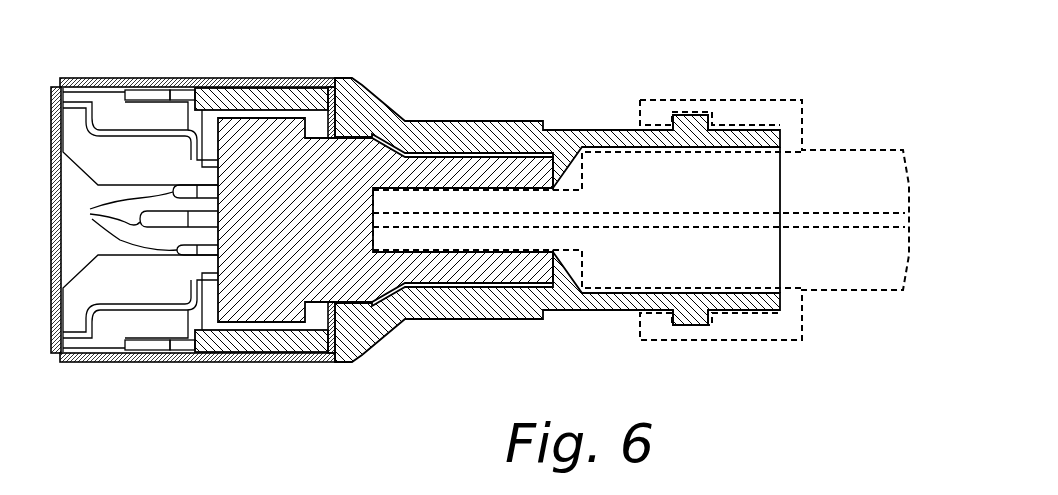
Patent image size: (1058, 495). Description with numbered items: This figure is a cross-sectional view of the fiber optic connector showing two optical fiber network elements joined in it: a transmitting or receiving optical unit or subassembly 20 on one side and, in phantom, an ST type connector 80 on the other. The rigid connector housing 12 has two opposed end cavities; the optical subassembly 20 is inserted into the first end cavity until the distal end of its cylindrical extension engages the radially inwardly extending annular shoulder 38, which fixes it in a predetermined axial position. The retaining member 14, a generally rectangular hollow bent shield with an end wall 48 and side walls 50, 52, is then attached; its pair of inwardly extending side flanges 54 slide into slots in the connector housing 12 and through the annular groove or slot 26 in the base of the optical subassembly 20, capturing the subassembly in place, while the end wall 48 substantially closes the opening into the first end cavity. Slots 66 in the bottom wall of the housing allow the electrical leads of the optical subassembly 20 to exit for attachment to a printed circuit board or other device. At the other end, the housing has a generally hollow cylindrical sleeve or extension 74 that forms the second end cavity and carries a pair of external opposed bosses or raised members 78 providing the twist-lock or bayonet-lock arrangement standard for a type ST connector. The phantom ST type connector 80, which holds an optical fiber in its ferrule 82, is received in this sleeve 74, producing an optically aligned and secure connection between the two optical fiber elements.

The connector housing 12 is at (470, 120).
The retaining member 14 is at (276, 74).
The transmitting or receiving optical unit or subassembly 20 is at (395, 78).
The annular groove or slot 26 is at (322, 362).
The annular shoulder 38 is at (547, 258).
The end wall 48 is at (63, 138).
The side wall 50 is at (147, 363).
The side wall 52 is at (188, 78).
The side flanges 54 is at (353, 78).
The slots 66 is at (139, 220).
The cylindrical sleeve or extension 74 is at (613, 310).
The bosses or raised members 78 is at (690, 115).
The ST type connector 80 is at (803, 98).
The ferrule 82 is at (503, 195).